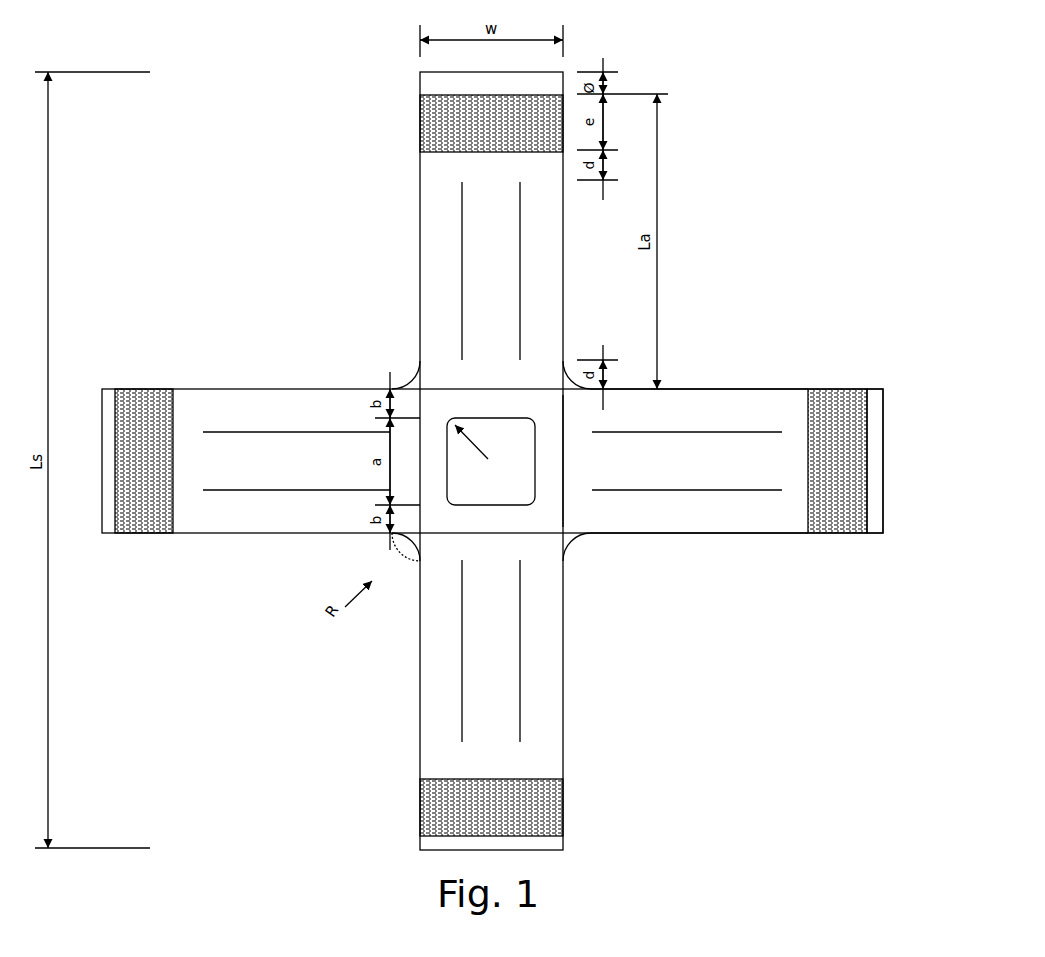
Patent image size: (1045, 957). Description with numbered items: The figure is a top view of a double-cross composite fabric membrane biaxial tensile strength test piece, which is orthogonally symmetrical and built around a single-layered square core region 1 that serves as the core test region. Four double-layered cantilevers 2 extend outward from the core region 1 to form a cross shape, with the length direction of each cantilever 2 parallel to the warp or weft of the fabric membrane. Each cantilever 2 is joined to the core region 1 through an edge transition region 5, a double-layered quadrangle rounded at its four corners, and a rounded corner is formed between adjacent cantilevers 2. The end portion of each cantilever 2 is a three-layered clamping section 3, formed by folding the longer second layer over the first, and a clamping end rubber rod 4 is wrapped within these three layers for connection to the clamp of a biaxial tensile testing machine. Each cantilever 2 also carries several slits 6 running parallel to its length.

The core region 1 is at (488, 459).
The cantilever 2 is at (745, 517).
The clamping section 3 is at (838, 389).
The clamping end rubber rod 4 is at (873, 395).
The edge transition region 5 is at (552, 447).
The slit 6 is at (520, 712).